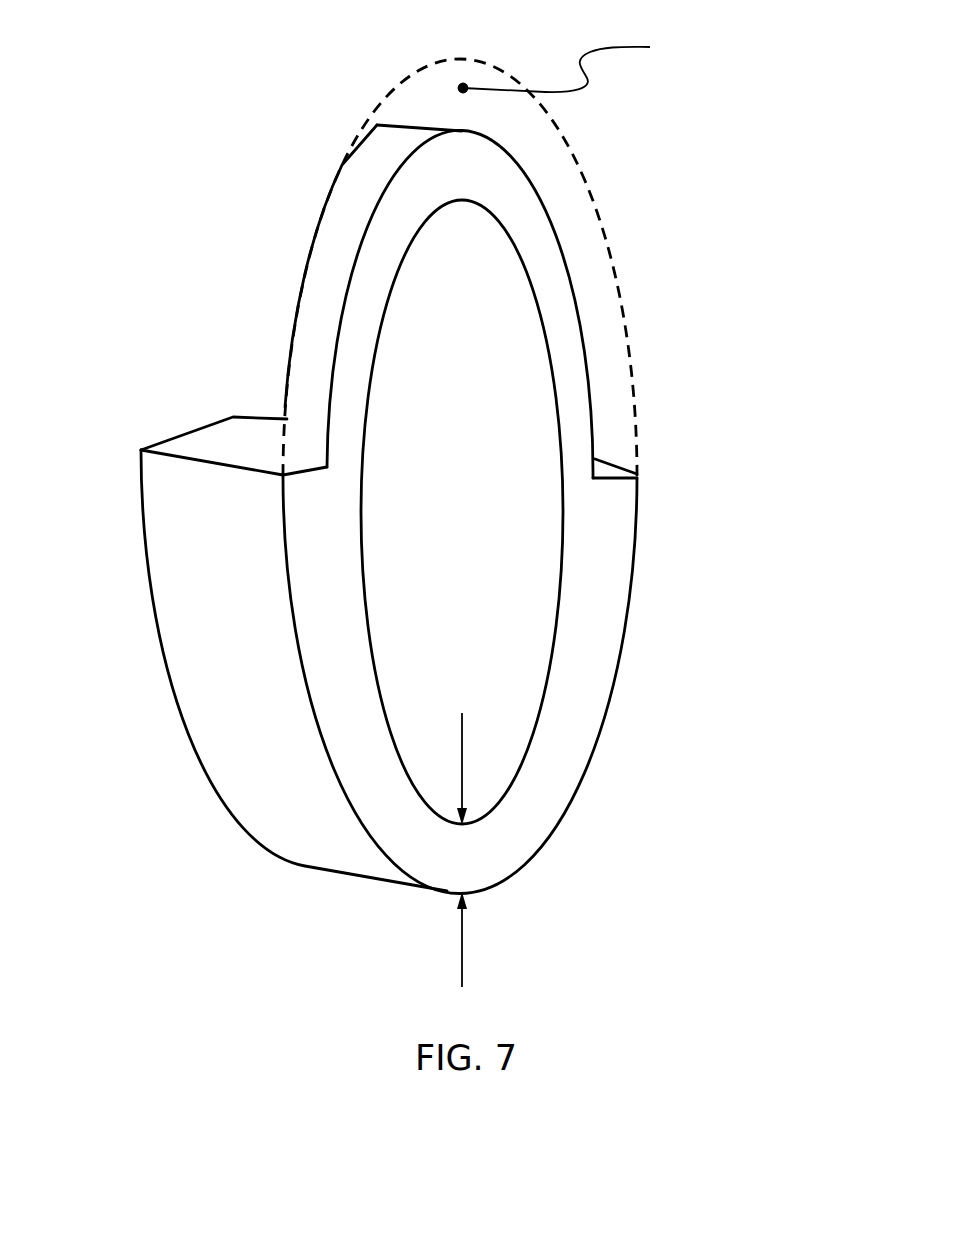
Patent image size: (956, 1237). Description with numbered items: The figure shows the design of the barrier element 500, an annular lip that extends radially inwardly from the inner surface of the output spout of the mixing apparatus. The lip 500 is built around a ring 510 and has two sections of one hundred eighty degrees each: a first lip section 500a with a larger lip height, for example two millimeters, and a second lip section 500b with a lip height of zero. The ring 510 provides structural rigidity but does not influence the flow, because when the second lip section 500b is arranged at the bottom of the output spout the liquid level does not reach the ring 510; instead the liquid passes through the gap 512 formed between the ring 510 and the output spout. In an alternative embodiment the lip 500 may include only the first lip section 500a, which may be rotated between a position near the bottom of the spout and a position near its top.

The barrier element 500 is at (439, 493).
The first lip section 500a is at (585, 842).
The second lip section 500b is at (370, 85).
The ring 510 is at (457, 180).
The gap 512 is at (547, 145).